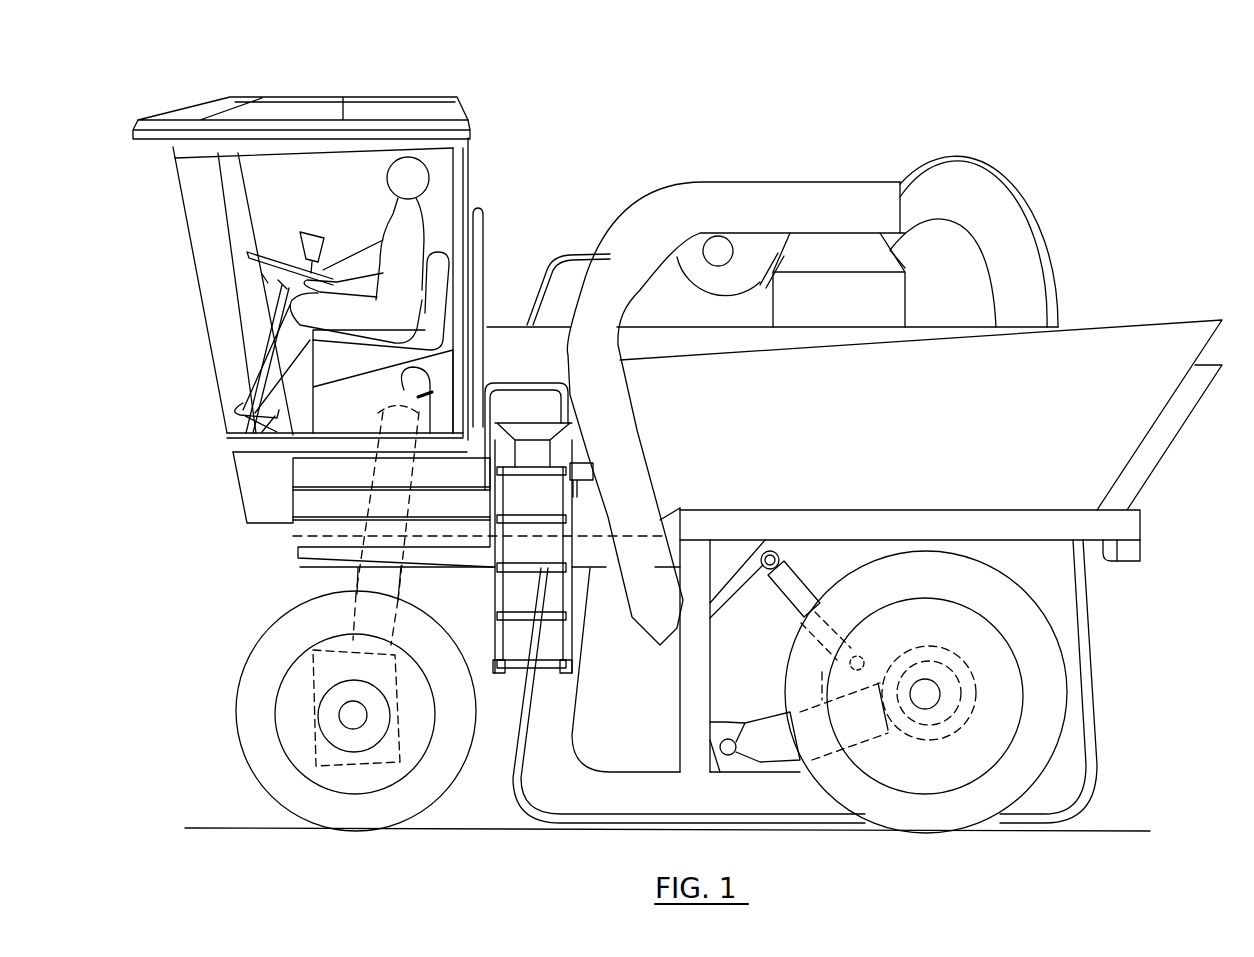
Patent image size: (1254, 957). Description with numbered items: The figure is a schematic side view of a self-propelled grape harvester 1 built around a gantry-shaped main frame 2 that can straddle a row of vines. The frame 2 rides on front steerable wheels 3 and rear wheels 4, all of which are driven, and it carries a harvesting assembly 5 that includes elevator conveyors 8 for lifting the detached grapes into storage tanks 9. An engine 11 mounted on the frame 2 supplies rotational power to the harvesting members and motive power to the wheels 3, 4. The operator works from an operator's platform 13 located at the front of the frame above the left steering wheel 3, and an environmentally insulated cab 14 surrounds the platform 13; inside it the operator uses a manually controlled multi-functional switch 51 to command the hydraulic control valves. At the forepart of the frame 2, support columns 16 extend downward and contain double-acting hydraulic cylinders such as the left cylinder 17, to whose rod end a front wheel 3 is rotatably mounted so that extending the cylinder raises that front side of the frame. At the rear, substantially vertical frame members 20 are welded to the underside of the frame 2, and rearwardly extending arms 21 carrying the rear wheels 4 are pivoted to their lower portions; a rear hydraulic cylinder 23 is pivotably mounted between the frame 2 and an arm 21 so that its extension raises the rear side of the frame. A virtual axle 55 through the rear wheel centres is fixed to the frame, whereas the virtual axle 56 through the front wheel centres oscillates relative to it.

The grape harvester 1 is at (876, 157).
The main frame 2 is at (1105, 556).
The front steerable wheels 3 is at (248, 702).
The rear wheels 4 is at (1035, 766).
The harvesting assembly 5 is at (1117, 706).
The elevator conveyors 8 is at (1092, 660).
The storage tanks 9 is at (1112, 338).
The engine 11 is at (503, 314).
The operator's platform 13 is at (217, 495).
The cab 14 is at (206, 107).
The support columns 16 is at (357, 578).
The left hydraulic cylinder 17 is at (392, 576).
The vertical frame members 20 is at (690, 700).
The rearwardly extending arms 21 is at (762, 728).
The rear left hydraulic cylinder 23 is at (792, 598).
The multi-functional switch 51 is at (315, 230).
The virtual rear axle 55 is at (927, 695).
The virtual front axle 56 is at (355, 715).